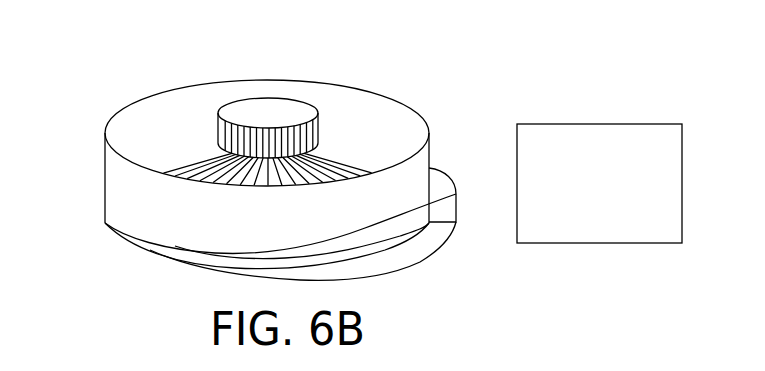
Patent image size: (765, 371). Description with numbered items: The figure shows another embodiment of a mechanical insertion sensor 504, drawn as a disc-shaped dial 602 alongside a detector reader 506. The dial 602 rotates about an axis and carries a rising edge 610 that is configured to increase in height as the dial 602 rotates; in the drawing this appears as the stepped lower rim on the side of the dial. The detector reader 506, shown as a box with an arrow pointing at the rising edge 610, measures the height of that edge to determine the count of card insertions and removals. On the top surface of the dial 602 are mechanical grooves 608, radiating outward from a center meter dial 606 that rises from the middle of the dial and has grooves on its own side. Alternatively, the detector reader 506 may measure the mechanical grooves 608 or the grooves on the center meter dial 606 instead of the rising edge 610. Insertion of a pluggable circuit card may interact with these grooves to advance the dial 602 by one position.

The mechanical insertion sensor 504 is at (181, 80).
The detector reader 506 is at (468, 185).
The dial 602 is at (113, 116).
The center meter dial 606 is at (290, 97).
The mechanical grooves 608 is at (203, 152).
The rising edge 610 is at (403, 226).